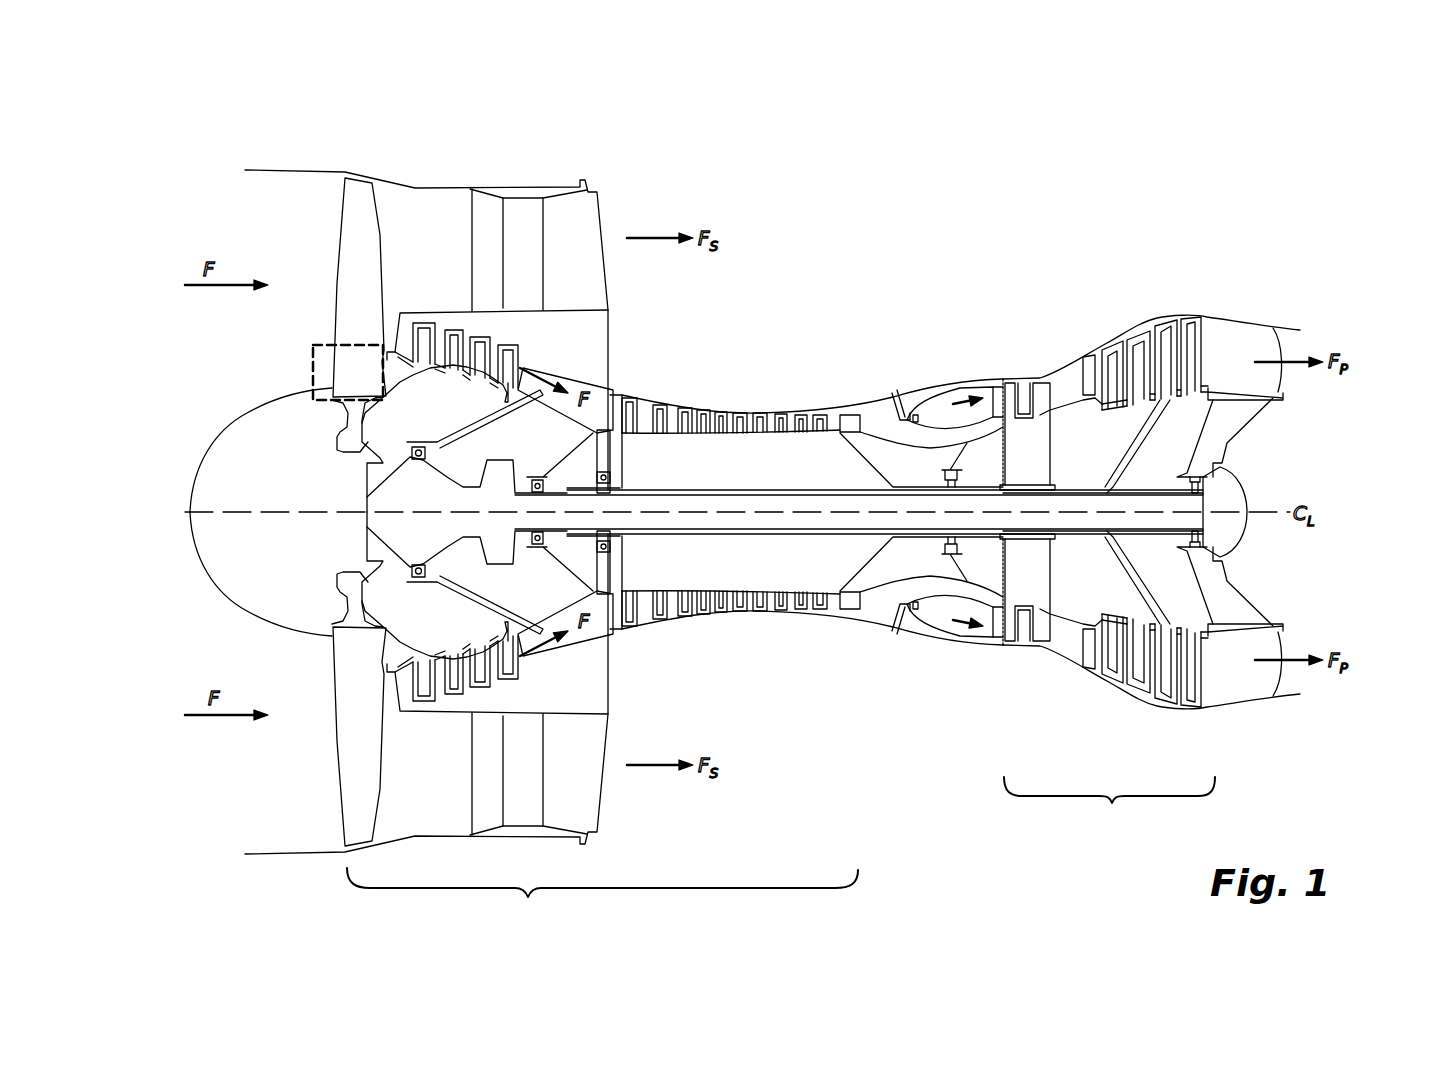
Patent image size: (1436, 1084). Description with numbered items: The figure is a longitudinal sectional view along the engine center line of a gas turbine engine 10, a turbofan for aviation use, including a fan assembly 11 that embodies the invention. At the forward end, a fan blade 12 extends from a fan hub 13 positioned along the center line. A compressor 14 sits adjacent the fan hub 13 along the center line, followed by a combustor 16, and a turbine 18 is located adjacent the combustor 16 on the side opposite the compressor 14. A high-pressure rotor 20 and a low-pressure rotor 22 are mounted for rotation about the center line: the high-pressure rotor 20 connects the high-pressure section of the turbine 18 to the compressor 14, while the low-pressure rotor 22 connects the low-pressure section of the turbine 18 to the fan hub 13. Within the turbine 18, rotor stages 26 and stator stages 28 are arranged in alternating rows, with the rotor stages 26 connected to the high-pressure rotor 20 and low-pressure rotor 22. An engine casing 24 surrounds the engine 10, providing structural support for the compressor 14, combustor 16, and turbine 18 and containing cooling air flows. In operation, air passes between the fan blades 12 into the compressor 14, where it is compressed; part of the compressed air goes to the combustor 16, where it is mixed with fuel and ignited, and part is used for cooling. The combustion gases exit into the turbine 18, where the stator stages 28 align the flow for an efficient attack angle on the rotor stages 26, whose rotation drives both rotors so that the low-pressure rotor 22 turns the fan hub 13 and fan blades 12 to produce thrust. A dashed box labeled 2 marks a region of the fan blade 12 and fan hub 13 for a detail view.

The gas turbine engine 10 is at (230, 148).
The fan assembly 11 is at (315, 211).
The fan blade 12 is at (358, 258).
The fan hub 13 is at (330, 440).
The compressor 14 is at (602, 896).
The combustor 16 is at (968, 385).
The turbine 18 is at (1109, 804).
The high-pressure rotor 20 is at (850, 542).
The low-pressure rotor 22 is at (757, 518).
The engine casing 24 is at (918, 383).
The rotor stages 26 is at (1163, 322).
The stator stages 28 is at (1148, 323).
The detail view region 2 is at (310, 369).